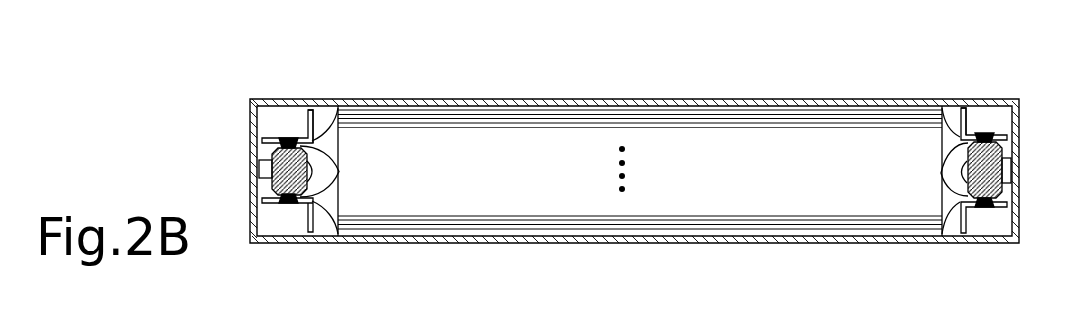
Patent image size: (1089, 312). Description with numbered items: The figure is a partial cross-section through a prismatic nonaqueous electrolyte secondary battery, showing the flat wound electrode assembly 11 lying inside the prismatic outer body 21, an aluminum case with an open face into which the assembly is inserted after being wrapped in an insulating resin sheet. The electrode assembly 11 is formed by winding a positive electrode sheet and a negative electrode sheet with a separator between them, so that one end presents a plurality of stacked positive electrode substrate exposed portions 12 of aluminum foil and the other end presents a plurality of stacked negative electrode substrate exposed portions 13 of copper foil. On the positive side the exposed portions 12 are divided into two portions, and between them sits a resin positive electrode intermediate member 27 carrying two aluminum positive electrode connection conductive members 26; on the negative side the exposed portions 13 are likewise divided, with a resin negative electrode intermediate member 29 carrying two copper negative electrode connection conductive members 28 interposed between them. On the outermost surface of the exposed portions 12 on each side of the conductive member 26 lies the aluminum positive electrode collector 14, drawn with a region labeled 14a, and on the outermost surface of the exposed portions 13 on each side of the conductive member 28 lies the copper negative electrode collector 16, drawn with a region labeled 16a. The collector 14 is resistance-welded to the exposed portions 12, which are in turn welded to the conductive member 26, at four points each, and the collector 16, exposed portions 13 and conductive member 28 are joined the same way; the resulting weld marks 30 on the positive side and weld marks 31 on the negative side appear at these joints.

The flat wound electrode assembly 11 is at (753, 138).
The positive electrode substrate exposed portions 12 is at (951, 140).
The negative electrode substrate exposed portions 13 is at (340, 108).
The positive electrode collector 14 is at (997, 135).
The lamp holder upright portion (right) 14a is at (963, 110).
The negative electrode collector 16 is at (282, 138).
The lamp holder upright portion (left) 16a is at (313, 112).
The prismatic outer body 21 is at (487, 99).
The positive electrode connection conductive member 26 is at (990, 156).
The positive electrode intermediate member 27 is at (1008, 174).
The negative electrode connection conductive member 28 is at (272, 149).
The negative electrode intermediate member 29 is at (259, 170).
The weld marks 30 is at (982, 133).
The weld marks 31 is at (289, 138).